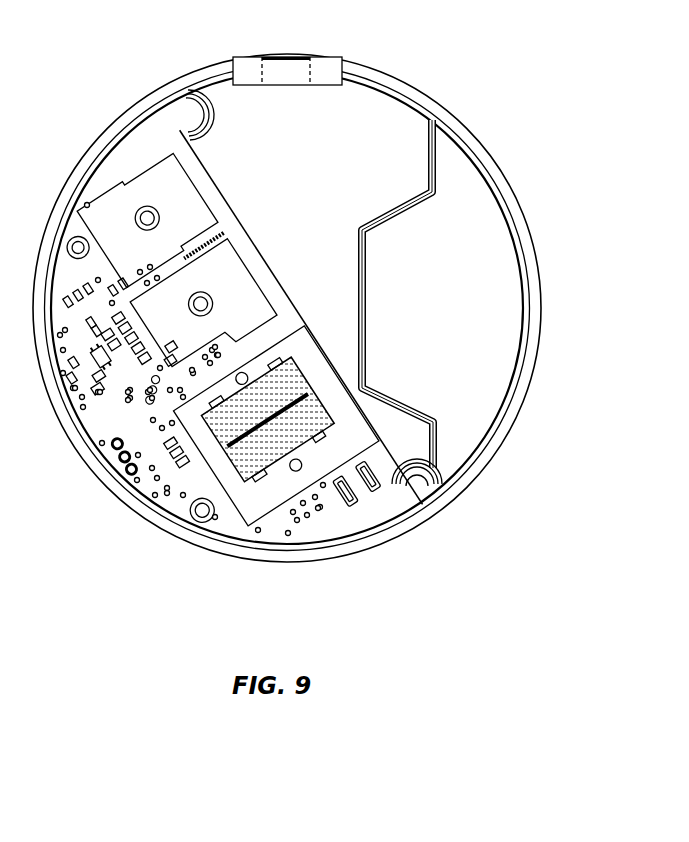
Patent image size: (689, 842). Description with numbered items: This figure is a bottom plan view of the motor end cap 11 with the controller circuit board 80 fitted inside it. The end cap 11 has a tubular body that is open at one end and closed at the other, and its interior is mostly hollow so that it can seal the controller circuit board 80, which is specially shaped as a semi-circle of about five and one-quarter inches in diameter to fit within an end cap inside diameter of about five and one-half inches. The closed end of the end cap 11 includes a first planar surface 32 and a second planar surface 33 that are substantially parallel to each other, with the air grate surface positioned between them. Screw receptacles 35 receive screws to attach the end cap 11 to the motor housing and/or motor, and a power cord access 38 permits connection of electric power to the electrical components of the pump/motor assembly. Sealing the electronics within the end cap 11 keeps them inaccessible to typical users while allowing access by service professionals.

The end cap 11 is at (474, 140).
The first planar surface 32 is at (362, 122).
The second planar surface 33 is at (490, 304).
The screw receptacles 35 is at (187, 113).
The power cord access 38 is at (284, 70).
The controller circuit board 80 is at (355, 515).